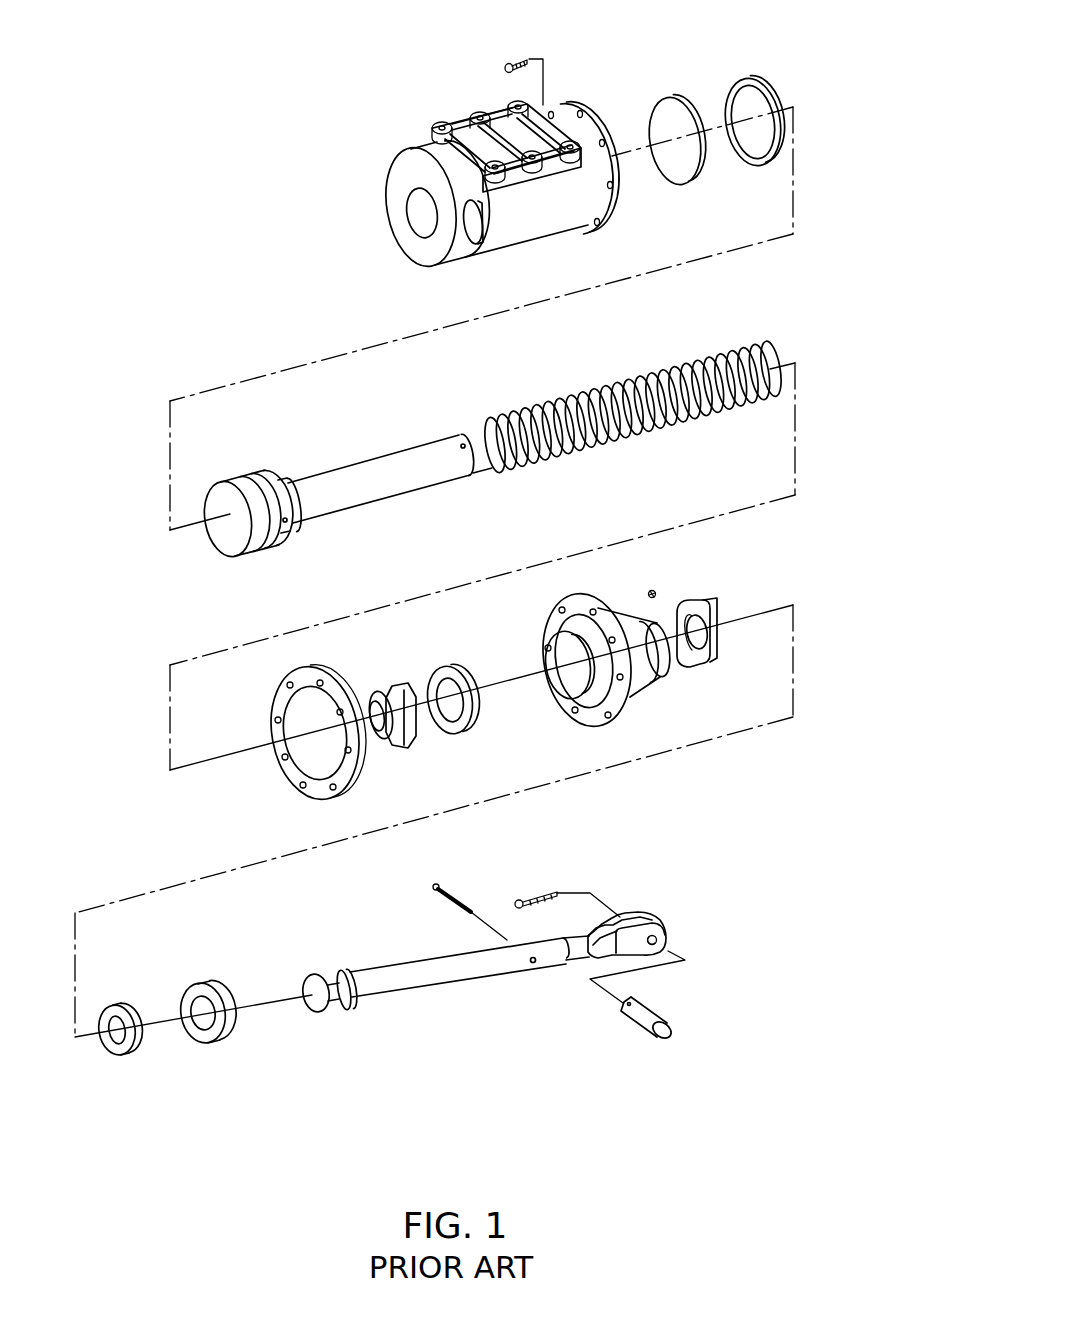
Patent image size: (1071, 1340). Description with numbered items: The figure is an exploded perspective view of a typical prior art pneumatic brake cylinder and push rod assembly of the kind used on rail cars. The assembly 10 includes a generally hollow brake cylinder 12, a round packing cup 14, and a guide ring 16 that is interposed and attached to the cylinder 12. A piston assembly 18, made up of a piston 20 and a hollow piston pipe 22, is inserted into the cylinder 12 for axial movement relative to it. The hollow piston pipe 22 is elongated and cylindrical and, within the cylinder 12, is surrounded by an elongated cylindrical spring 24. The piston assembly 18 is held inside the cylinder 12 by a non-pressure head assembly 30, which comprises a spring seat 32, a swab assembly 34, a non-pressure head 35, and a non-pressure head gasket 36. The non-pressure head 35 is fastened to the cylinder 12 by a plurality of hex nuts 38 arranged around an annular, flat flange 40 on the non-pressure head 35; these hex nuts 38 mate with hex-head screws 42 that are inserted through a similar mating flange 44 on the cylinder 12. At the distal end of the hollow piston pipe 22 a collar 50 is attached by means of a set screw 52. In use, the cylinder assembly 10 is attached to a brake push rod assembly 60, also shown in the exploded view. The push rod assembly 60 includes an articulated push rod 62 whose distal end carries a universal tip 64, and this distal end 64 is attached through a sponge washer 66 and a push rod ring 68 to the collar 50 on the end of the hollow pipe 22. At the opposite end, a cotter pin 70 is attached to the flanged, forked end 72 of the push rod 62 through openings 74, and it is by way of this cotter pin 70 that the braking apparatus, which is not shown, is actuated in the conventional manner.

The assembly 10 is at (756, 30).
The brake cylinder 12 is at (521, 236).
The packing cup 14 is at (682, 163).
The guide ring 16 is at (748, 163).
The piston assembly 18 is at (331, 402).
The piston 20 is at (257, 477).
The hollow piston pipe 22 is at (390, 447).
The spring 24 is at (622, 383).
The non-pressure head assembly 30 is at (552, 613).
The spring seat 32 is at (383, 683).
The swab assembly 34 is at (462, 673).
The non-pressure head 35 is at (577, 580).
The non-pressure head gasket 36 is at (278, 697).
The hex nuts 38 is at (657, 595).
The flange 40 is at (590, 720).
The hex-head screws 42 is at (520, 60).
The mating flange 44 is at (598, 112).
The collar 50 is at (720, 650).
The set screw 52 is at (722, 600).
The brake push rod assembly 60 is at (446, 1105).
The push rod 62 is at (433, 973).
The universal tip 64 is at (318, 1013).
The sponge washer 66 is at (227, 1030).
The push rod ring 68 is at (127, 1005).
The cotter pin 70 is at (653, 1017).
The forked end 72 is at (637, 908).
The openings 74 is at (662, 935).